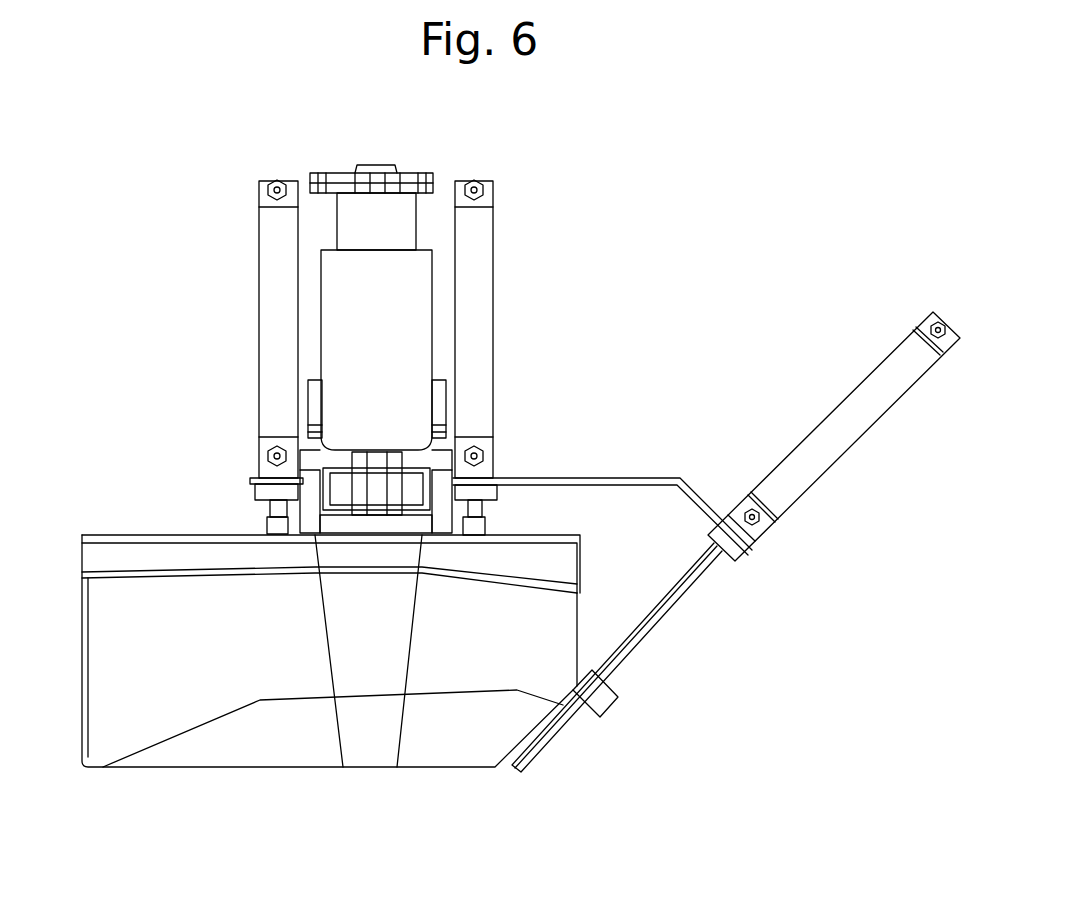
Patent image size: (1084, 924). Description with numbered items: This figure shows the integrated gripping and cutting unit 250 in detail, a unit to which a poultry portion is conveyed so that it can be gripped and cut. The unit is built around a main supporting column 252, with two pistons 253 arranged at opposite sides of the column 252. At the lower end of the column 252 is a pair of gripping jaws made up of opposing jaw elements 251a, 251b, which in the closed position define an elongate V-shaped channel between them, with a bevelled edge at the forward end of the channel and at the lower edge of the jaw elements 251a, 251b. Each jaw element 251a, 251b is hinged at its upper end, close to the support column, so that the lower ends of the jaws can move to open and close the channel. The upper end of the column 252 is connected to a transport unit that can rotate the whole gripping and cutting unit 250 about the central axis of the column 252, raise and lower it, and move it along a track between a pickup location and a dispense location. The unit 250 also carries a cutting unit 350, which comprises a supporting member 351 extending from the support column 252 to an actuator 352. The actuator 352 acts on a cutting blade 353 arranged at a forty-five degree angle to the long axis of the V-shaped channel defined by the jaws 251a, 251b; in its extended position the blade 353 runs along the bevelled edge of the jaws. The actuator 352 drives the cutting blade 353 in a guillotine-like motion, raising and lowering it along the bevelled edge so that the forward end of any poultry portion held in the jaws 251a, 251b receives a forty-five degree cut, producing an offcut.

The integrated gripping and cutting unit 250 is at (628, 242).
The jaw element 251a is at (143, 667).
The jaw element 251b is at (82, 608).
The main supporting column 252 is at (365, 329).
The piston 253 is at (272, 260).
The cutting unit 350 is at (722, 425).
The supporting member 351 is at (595, 478).
The actuator 352 is at (845, 425).
The cutting blade 353 is at (552, 733).